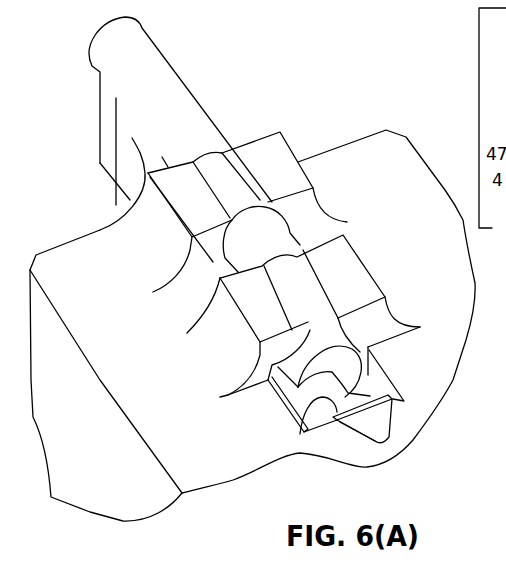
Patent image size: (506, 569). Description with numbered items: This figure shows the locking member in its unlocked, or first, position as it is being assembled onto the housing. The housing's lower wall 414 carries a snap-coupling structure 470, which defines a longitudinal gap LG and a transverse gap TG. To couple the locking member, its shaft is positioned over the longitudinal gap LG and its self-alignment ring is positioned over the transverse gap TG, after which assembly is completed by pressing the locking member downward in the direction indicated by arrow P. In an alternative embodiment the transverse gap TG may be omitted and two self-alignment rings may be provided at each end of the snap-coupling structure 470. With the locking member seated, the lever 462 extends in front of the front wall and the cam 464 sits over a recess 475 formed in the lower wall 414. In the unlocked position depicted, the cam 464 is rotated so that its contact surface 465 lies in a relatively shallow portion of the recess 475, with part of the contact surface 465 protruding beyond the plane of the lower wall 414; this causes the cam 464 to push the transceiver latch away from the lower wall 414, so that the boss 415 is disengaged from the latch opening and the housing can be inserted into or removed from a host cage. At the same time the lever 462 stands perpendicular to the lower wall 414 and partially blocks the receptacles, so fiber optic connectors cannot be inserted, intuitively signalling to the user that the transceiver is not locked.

The lower wall 414 is at (190, 430).
The lever 462 is at (155, 72).
The snap-coupling structure 470 is at (227, 143).
The recess 475 is at (376, 374).
The cam 464 is at (388, 392).
The boss 415 is at (385, 425).
The contact surface 465 is at (297, 392).
The transverse gap TG is at (165, 218).
The longitudinal gap LG is at (301, 295).
The pressing direction arrow P is at (268, 230).